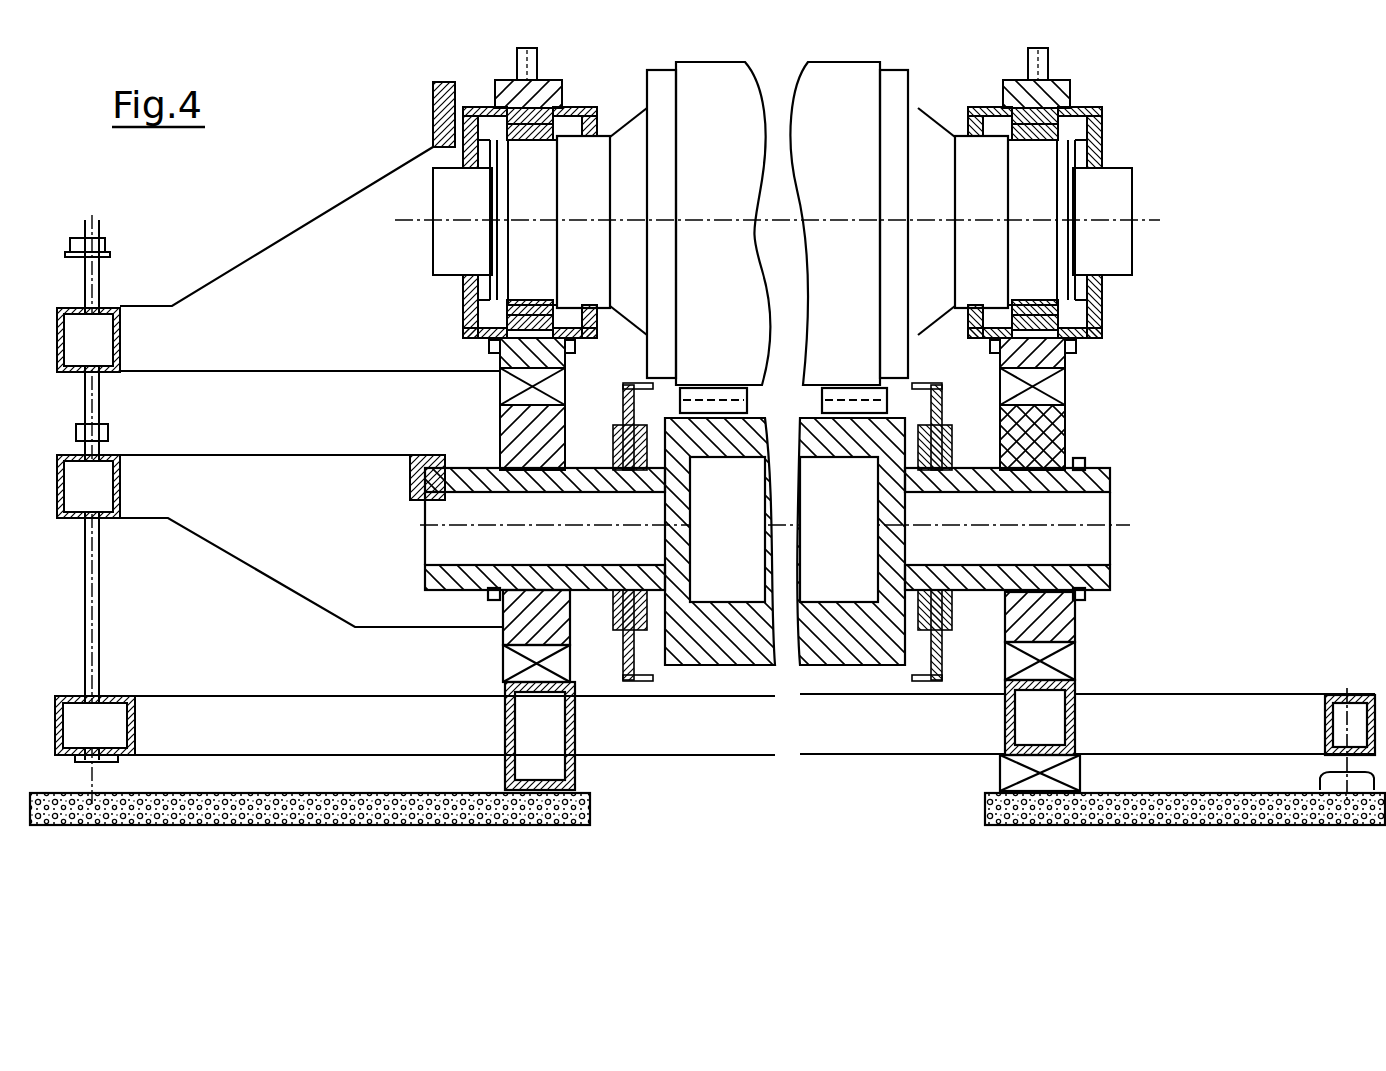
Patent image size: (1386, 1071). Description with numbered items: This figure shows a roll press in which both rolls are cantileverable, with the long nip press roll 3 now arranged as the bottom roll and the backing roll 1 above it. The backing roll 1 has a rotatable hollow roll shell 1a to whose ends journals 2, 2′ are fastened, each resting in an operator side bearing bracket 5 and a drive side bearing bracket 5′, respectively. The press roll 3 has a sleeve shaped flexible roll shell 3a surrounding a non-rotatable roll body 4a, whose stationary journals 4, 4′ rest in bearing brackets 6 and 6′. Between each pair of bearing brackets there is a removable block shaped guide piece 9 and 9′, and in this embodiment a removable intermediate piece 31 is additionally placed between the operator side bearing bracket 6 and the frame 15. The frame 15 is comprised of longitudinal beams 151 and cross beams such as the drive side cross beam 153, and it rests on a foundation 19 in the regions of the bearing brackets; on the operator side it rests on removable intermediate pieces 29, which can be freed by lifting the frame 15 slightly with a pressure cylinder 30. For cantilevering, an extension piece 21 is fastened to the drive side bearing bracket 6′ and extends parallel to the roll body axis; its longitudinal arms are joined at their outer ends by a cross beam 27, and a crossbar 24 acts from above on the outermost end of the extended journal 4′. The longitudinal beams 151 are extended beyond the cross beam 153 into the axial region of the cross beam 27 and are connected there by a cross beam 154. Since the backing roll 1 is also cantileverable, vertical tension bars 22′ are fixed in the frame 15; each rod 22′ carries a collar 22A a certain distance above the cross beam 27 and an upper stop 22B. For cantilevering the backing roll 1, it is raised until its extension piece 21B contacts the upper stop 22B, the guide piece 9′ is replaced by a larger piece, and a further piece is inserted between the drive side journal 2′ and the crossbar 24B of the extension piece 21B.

The backing roll 1 is at (1176, 178).
The roll shell 1a is at (830, 74).
The journal 2 is at (962, 148).
The journal 2′ is at (598, 147).
The long nip press roll 3 is at (1190, 498).
The roll shell 3a is at (648, 674).
The journal 4 is at (1108, 577).
The journal 4′ is at (440, 582).
The roll body 4a is at (872, 655).
The bearing bracket 5 is at (1065, 96).
The bearing bracket 5′ is at (546, 84).
The bearing bracket 6 is at (1066, 426).
The bearing bracket 6′ is at (565, 620).
The guide piece 9 is at (1068, 386).
The guide piece 9′ is at (562, 393).
The frame 15 is at (1213, 690).
The foundation 19 is at (325, 796).
The extension piece 21 is at (240, 548).
The extension piece 21B is at (275, 260).
The tension bar 22′ is at (100, 573).
The collar 22A is at (108, 433).
The upper stop 22B is at (104, 256).
The crossbar 24 is at (412, 482).
The crossbar 24B is at (433, 116).
The cross beam 27 is at (122, 487).
The intermediate piece 29 is at (1078, 773).
The pressure cylinder 30 is at (1320, 784).
The intermediate piece 31 is at (1077, 662).
The longitudinal beam 151 is at (270, 696).
The cross beam 153 is at (572, 776).
The cross beam 154 is at (118, 696).